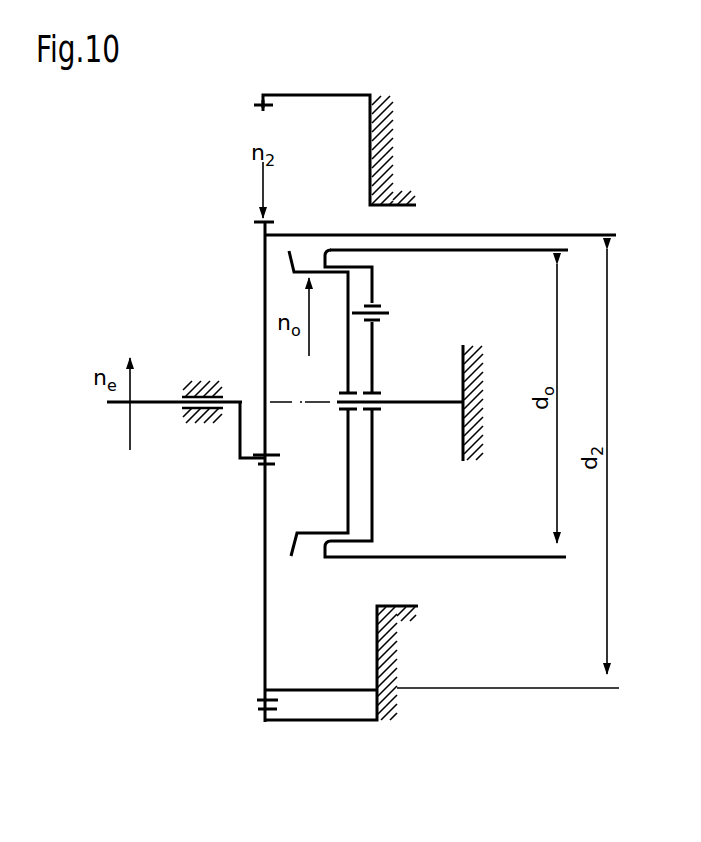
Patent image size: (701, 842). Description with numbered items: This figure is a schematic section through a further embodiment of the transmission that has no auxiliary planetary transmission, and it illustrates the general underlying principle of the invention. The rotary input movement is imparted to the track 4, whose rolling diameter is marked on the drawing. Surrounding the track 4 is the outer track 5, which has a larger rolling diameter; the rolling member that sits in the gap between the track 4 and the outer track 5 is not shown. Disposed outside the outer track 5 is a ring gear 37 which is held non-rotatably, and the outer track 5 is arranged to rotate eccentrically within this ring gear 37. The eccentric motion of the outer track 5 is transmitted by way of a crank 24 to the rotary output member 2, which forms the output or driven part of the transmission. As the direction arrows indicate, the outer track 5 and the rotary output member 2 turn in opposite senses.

The rotary output member 2 is at (167, 401).
The track 4 is at (318, 552).
The outer track 5 is at (308, 689).
The crank 24 is at (238, 436).
The ring gear 37 is at (259, 108).